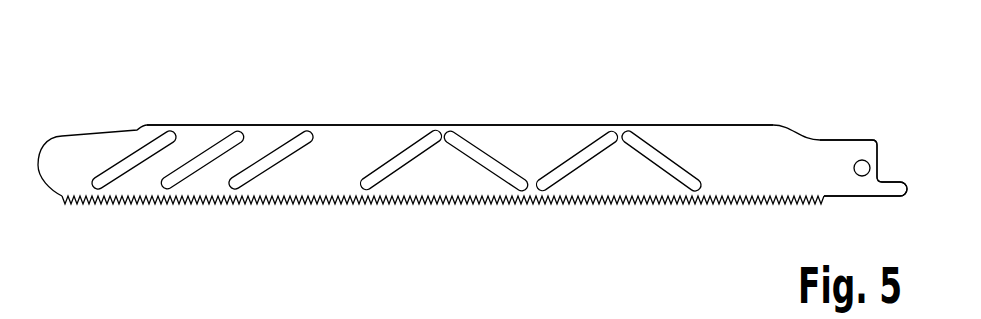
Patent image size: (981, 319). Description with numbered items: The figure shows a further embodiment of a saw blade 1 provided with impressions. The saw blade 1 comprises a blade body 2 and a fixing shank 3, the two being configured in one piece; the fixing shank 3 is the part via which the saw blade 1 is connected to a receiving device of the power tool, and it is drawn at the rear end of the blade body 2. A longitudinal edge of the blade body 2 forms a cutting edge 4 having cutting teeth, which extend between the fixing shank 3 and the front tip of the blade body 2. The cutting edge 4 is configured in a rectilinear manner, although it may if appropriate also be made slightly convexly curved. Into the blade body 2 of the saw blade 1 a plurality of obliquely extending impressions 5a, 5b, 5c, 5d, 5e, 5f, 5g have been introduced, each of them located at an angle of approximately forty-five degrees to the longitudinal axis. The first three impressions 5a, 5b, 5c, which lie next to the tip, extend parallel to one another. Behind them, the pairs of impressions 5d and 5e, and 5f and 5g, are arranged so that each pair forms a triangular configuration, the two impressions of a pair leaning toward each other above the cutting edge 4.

The saw blade 1 is at (780, 90).
The blade body 2 is at (332, 125).
The fixing shank 3 is at (843, 183).
The cutting edge 4 is at (450, 198).
The impression 5a is at (120, 172).
The impression 5b is at (190, 172).
The impression 5c is at (256, 172).
The impression 5d is at (388, 172).
The impression 5e is at (504, 172).
The impression 5f is at (562, 172).
The impression 5g is at (682, 172).